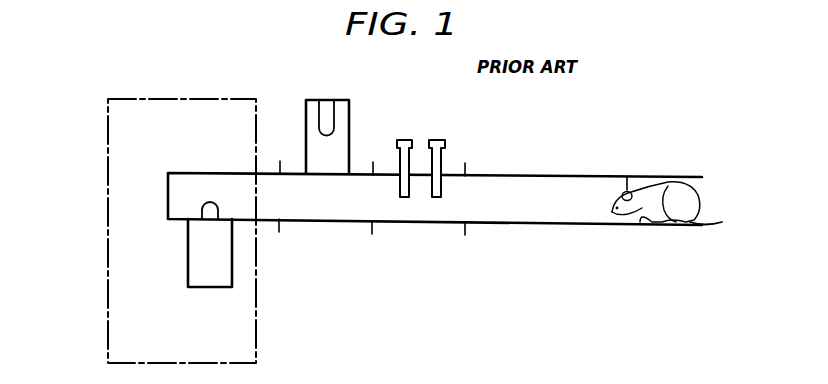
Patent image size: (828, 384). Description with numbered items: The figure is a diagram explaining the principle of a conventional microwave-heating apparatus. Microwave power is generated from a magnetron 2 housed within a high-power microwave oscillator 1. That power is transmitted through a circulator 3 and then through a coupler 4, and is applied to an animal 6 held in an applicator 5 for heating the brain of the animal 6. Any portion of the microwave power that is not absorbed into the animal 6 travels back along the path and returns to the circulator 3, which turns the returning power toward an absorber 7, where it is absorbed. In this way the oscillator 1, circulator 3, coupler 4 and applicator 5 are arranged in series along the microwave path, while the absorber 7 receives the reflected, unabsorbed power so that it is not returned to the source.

The high-power microwave oscillator 1 is at (107, 298).
The magnetron 2 is at (203, 250).
The circulator 3 is at (338, 208).
The coupler 4 is at (424, 208).
The applicator 5 is at (553, 210).
The animal 6 is at (673, 210).
The absorber 7 is at (325, 115).